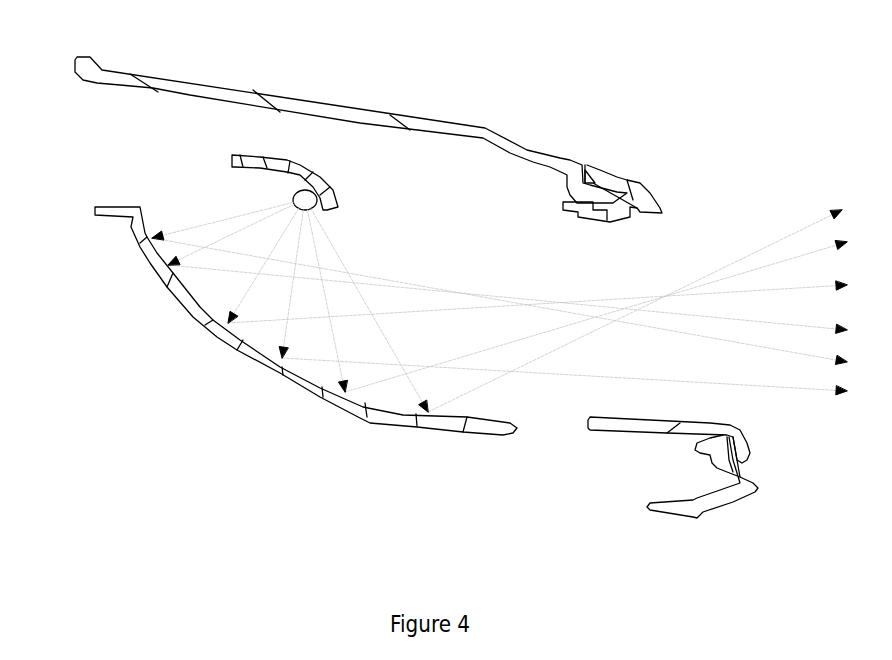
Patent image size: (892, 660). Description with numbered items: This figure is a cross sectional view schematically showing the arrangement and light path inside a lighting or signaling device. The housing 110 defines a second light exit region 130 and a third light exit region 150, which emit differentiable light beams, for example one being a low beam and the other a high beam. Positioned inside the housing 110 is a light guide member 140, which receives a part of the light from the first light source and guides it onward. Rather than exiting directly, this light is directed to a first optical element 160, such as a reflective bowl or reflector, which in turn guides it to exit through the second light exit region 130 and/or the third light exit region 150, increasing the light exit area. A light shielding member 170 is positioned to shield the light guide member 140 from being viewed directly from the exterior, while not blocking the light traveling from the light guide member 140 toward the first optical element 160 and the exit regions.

The housing 110 is at (432, 135).
The second light exit region 130 is at (715, 294).
The third light exit region 150 is at (671, 248).
The light guide member 140 is at (293, 198).
The first optical element 160 is at (257, 360).
The light shielding member 170 is at (223, 160).